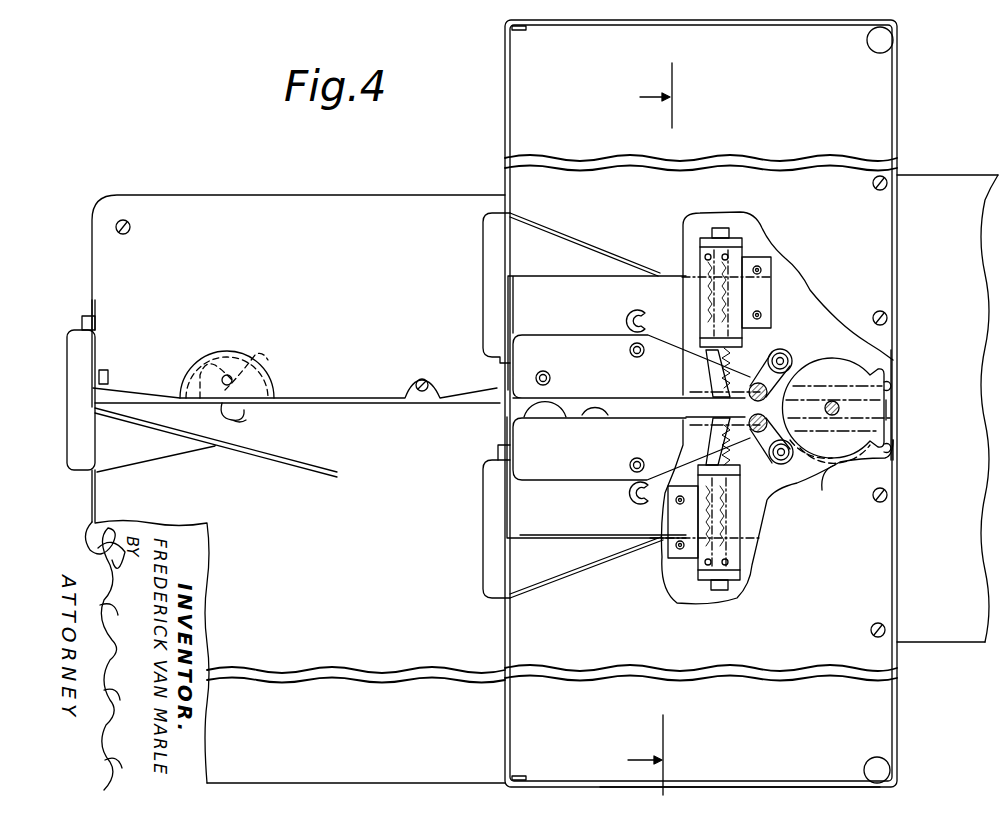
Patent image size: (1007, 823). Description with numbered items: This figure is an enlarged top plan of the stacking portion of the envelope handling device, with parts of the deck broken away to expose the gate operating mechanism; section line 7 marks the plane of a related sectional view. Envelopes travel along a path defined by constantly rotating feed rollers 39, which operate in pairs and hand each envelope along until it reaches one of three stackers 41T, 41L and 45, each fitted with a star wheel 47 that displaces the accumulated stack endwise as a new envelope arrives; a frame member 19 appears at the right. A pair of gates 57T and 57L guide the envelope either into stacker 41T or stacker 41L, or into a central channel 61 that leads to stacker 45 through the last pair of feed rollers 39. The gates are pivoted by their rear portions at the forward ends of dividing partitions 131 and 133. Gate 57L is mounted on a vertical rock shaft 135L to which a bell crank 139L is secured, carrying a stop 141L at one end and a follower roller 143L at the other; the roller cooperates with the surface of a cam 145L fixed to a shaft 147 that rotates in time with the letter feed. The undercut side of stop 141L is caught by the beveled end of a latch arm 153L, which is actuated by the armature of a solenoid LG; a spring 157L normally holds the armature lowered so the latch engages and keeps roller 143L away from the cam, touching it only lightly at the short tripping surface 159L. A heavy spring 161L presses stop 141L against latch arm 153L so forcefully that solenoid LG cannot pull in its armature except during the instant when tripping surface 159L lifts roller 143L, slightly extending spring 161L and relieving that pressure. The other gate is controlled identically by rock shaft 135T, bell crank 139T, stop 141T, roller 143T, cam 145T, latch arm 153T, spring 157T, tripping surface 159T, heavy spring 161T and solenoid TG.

The section line 7- 7 is at (638, 429).
The frame member 19 is at (953, 635).
The feed rollers 39 is at (535, 404).
The stacker 41L is at (810, 195).
The stacker 41T is at (790, 590).
The stacker 45 is at (255, 527).
The star wheel 47 is at (244, 418).
The gate 57L is at (895, 378).
The gate 57T is at (883, 468).
The central channel 61 is at (605, 410).
The dividing partition 131 is at (570, 345).
The dividing partition 133 is at (592, 470).
The vertical rock shaft 135L is at (765, 383).
The vertical rock shaft 135T is at (762, 433).
The bell crank 139L is at (818, 377).
The bell crank 139T is at (835, 447).
The stop 141L is at (705, 392).
The stop 141T is at (715, 419).
The follower roller 143L is at (786, 358).
The follower roller 143T is at (784, 465).
The cam 145L is at (870, 386).
The cam 145T is at (868, 458).
The shaft 147 is at (840, 408).
The latch arm 153L is at (730, 372).
The latch arm 153T is at (710, 440).
The spring 157L is at (735, 358).
The spring 157T is at (702, 488).
The tripping surface 159L is at (838, 485).
The tripping surface 159T is at (892, 410).
The heavy spring 161L is at (765, 352).
The heavy spring 161T is at (762, 440).
The solenoid LG is at (713, 300).
The solenoid TG is at (700, 556).